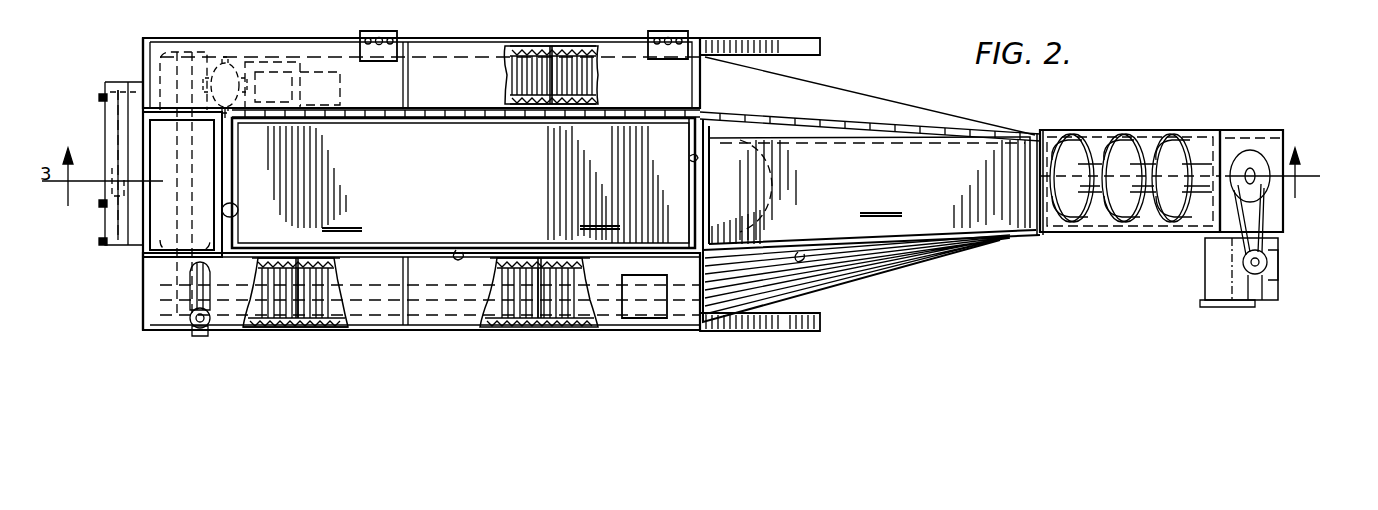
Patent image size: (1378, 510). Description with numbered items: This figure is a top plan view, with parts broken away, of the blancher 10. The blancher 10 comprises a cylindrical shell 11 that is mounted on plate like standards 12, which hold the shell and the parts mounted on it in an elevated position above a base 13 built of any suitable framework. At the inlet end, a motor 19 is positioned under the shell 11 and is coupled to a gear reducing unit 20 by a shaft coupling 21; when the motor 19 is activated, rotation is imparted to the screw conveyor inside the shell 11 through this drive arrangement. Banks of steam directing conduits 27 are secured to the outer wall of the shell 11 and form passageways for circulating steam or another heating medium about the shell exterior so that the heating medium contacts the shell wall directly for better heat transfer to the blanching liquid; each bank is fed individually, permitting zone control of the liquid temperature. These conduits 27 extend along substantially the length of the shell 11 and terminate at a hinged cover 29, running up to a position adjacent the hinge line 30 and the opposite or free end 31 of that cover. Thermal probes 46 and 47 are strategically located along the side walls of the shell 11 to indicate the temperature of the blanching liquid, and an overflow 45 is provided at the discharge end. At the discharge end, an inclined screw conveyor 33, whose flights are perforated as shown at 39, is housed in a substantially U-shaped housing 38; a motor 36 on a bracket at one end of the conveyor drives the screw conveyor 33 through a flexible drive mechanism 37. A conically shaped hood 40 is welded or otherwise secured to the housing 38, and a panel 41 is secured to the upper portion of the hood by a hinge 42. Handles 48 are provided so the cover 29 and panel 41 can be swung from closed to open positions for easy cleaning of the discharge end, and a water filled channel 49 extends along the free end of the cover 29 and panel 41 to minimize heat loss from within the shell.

The blancher 10 is at (612, 40).
The cylindrical shell 11 is at (470, 76).
The plate like standards 12 is at (415, 286).
The base 13 is at (822, 46).
The motor 19 is at (330, 92).
The gear reducing unit 20 is at (165, 88).
The shaft coupling 21 is at (236, 66).
The steam directing conduit 27 is at (328, 296).
The hinged cover 29 is at (465, 188).
The hinge line 30 is at (440, 110).
The free end 31 is at (668, 250).
The inclined screw conveyor 33 is at (1196, 166).
The motor 36 is at (1262, 290).
The flexible drive mechanism 37 is at (1283, 218).
The U-shaped housing 38 is at (1086, 133).
The perforated flights 39 is at (1158, 157).
The conically shaped hood 40 is at (868, 265).
The panel 41 is at (940, 212).
The hinge 42 is at (866, 124).
The overflow 45 is at (624, 294).
The thermal probe 46 is at (378, 31).
The thermal probe 47 is at (684, 31).
The handle 48 is at (328, 228).
The water filled channel 49 is at (232, 217).